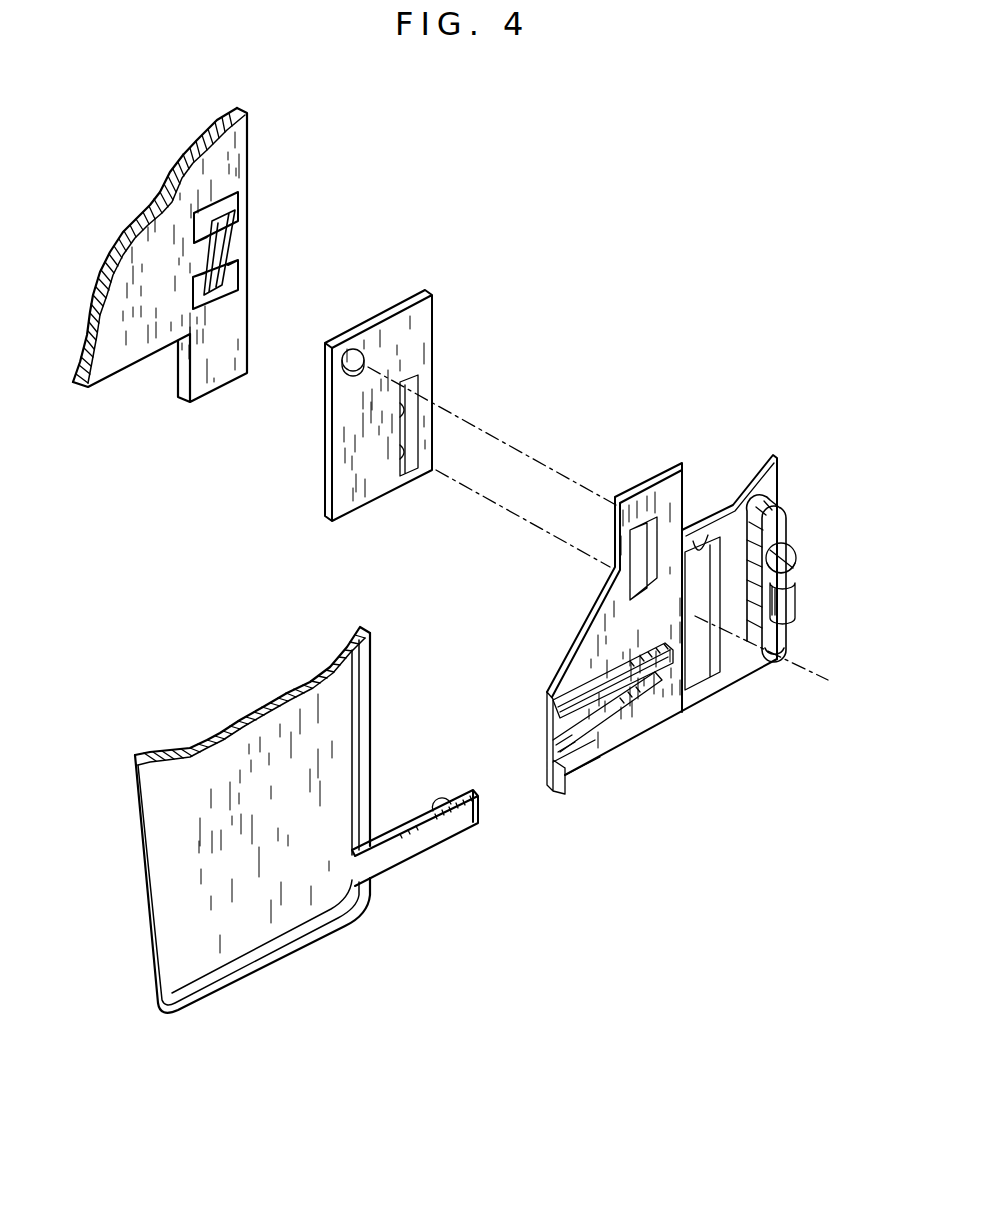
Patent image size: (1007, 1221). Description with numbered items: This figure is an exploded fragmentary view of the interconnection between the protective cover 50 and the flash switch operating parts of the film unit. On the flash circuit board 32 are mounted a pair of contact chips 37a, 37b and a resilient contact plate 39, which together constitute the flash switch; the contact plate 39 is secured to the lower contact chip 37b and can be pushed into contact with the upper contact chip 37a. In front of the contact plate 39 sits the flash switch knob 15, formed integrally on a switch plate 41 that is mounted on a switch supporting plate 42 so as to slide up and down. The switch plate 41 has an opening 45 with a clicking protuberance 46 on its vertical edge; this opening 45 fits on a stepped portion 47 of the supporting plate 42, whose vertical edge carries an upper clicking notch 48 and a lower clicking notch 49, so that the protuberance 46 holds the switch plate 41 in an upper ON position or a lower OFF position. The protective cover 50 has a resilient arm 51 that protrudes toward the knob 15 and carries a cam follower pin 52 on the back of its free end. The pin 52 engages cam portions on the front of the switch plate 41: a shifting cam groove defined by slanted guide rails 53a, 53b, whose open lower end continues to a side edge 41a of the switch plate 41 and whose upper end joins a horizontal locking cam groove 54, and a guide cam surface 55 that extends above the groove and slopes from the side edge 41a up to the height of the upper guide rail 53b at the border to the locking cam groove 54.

The flash switch knob 15 is at (797, 557).
The flash circuit board 32 is at (250, 122).
The upper contact chip 37a is at (238, 197).
The lower contact chip 37b is at (238, 277).
The resilient contact plate 39 is at (232, 238).
The switch plate 41 is at (648, 478).
The side edge of the switch plate 41a is at (549, 735).
The switch supporting plate 42 is at (437, 293).
The opening 45 is at (705, 522).
The clicking protuberance 46 is at (688, 613).
The stepped portion 47 is at (413, 385).
The upper clicking notch 48 is at (397, 408).
The lower clicking notch 49 is at (397, 452).
The protective cover 50 is at (268, 967).
The arm 51 is at (427, 840).
The cam follower pin 52 is at (443, 801).
The guide rail 53a is at (592, 752).
The upper guide rail 53b is at (567, 748).
The locking cam groove 54 is at (658, 680).
The guide cam surface 55 is at (577, 715).